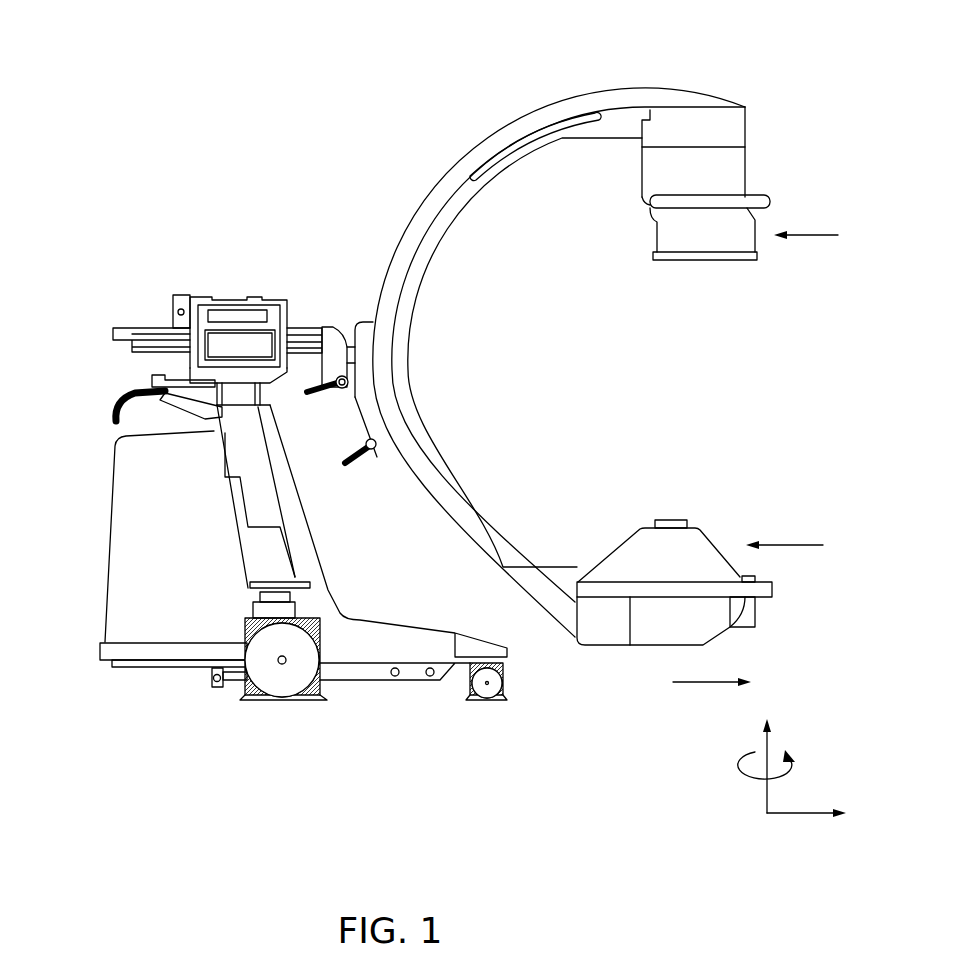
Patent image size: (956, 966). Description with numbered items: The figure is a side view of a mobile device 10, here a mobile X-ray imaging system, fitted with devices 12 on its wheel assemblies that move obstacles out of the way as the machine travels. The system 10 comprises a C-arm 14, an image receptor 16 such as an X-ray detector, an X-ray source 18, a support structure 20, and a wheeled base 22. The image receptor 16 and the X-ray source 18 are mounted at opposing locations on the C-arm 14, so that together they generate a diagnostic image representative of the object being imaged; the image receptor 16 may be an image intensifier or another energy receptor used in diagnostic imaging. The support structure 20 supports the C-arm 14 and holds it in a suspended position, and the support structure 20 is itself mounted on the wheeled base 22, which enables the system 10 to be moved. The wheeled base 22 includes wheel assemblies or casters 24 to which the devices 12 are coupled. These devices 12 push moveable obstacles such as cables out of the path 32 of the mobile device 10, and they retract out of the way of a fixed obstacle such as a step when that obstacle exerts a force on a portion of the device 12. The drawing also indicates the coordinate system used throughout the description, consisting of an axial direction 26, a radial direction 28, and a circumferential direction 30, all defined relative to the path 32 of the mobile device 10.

The mobile device 10 is at (321, 50).
The device 12 is at (245, 686).
The C-arm 14 is at (411, 191).
The image receptor 16 is at (803, 545).
The X-ray source 18 is at (820, 235).
The support structure 20 is at (230, 281).
The wheeled base 22 is at (95, 630).
The wheel assemblies or casters 24 is at (247, 628).
The axial direction 26 is at (800, 820).
The radial direction 28 is at (762, 797).
The circumferential direction 30 is at (795, 777).
The path 32 is at (712, 684).